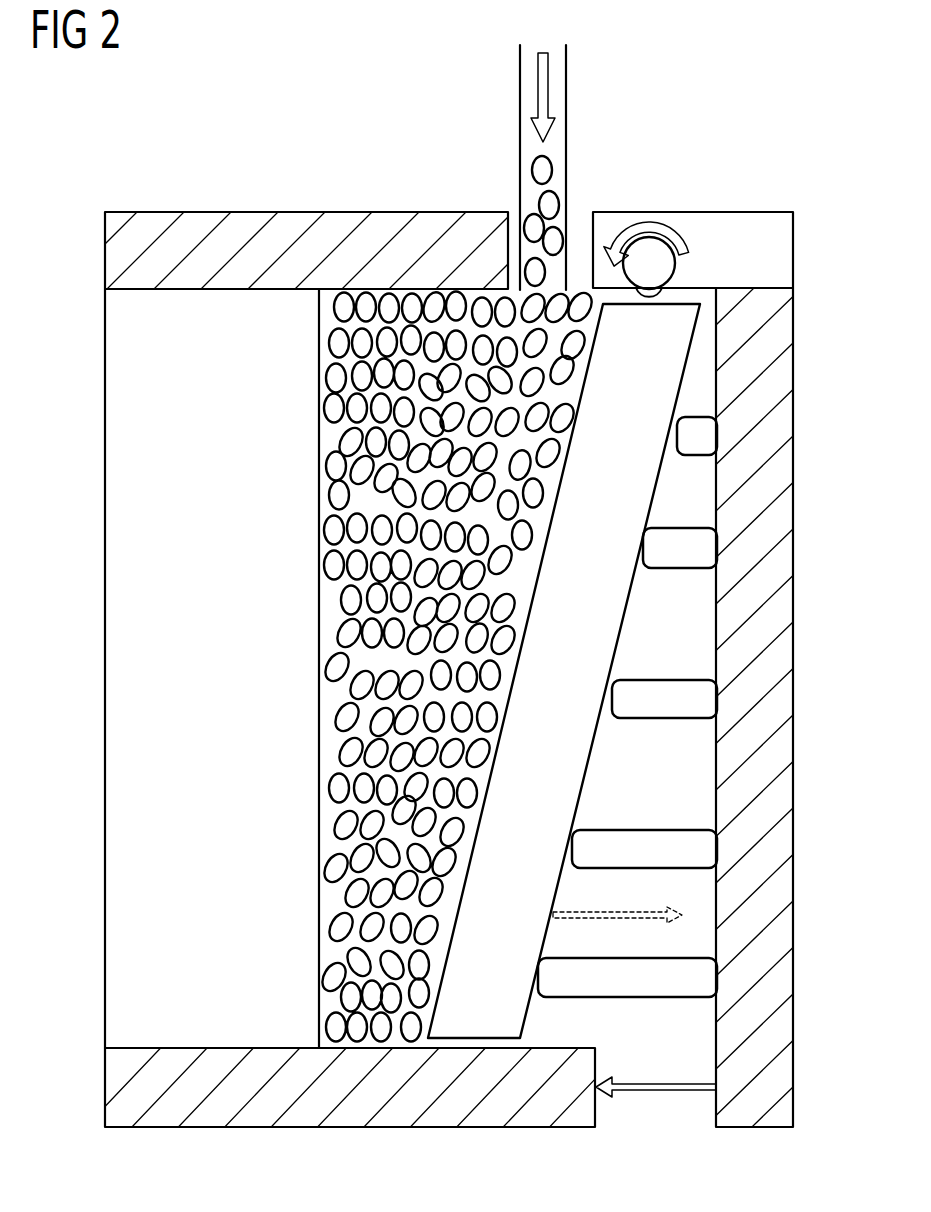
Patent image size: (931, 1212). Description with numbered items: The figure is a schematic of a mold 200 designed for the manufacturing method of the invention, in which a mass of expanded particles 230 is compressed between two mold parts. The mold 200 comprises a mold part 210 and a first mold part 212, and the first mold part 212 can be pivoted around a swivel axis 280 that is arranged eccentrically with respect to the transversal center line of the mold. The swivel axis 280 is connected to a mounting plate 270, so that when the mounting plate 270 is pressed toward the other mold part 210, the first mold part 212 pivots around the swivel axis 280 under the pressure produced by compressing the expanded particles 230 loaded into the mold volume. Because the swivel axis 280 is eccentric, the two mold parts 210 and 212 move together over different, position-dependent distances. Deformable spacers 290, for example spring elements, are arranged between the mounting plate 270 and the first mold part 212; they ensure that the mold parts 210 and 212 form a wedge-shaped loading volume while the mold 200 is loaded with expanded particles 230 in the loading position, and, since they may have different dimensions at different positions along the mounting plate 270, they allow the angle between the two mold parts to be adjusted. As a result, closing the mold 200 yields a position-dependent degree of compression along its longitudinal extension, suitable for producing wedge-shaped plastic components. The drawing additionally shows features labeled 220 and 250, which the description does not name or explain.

The mold 200 is at (265, 177).
The mold part 210 is at (120, 629).
The first mold part 212 is at (608, 628).
The feed pipe 220 is at (518, 146).
The expanded particles 230 is at (410, 533).
The particle feed stream 250 is at (577, 240).
The mounting plate 270 is at (778, 1028).
The swivel axis 280 is at (660, 268).
The deformable spacers 290 is at (685, 443).